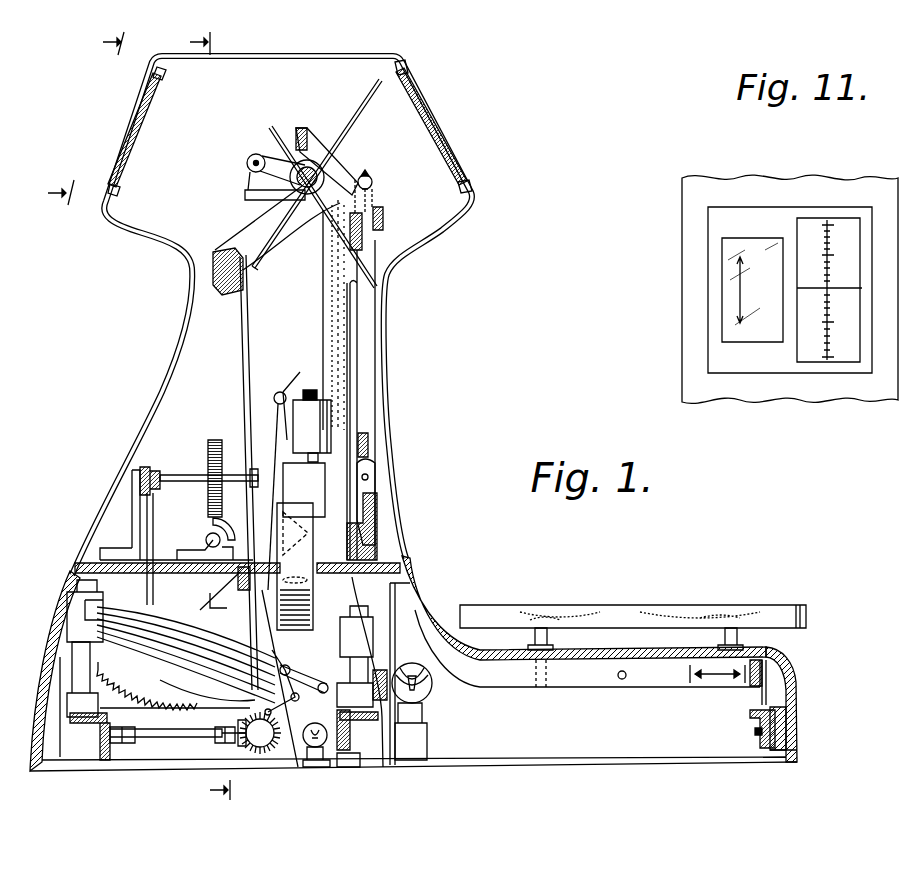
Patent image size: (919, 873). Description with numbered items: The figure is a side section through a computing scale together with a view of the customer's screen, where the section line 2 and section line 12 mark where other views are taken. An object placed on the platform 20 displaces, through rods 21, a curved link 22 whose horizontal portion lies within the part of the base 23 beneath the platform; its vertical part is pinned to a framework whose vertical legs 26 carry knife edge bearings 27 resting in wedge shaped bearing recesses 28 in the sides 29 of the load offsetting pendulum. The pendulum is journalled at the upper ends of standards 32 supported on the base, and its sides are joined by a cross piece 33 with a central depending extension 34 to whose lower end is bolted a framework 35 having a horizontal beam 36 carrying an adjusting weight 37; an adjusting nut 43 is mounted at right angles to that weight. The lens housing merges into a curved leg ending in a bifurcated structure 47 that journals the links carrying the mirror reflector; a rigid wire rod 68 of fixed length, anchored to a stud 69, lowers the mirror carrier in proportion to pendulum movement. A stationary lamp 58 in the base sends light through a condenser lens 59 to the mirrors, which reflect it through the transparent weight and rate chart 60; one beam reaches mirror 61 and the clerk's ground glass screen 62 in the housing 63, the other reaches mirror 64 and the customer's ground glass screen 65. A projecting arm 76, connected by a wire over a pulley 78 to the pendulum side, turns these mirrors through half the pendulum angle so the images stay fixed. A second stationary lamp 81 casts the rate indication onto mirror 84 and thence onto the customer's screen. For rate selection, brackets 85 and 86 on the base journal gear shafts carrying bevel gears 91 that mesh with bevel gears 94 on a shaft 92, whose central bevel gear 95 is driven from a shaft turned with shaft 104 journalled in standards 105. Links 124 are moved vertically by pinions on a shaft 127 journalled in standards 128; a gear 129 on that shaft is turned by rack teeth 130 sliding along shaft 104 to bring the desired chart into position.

In FIG. 1, the section line 2- 2 is at (217, 418).
In FIG. 1, the section line 12- 12 is at (98, 119).
In FIG. 1, the platform 20 is at (733, 612).
In FIG. 1, the rods 21 is at (733, 638).
In FIG. 1, the curved link 22 is at (605, 678).
In FIG. 1, the base 23 is at (50, 635).
In FIG. 1, the vertical legs 26 is at (372, 391).
In FIG. 1, the knife edge bearings 27 is at (370, 178).
In FIG. 1, the wedge shaped bearing recesses 28 is at (372, 192).
In FIG. 1, the sides 29 is at (338, 168).
In FIG. 1, the standards 32 is at (337, 278).
In FIG. 1, the cross piece 33 is at (233, 288).
In FIG. 1, the central depending extension 34 is at (250, 333).
In FIG. 1, the framework 35 is at (295, 597).
In FIG. 1, the horizontal beam 36 is at (315, 483).
In FIG. 1, the adjusting weight 37 is at (306, 427).
In FIG. 1, the adjusting nut 43 is at (240, 572).
In FIG. 1, the bifurcated structure 47 is at (270, 693).
In FIG. 1, the stationary lamp 58 is at (431, 697).
In FIG. 1, the condenser lens 59 is at (373, 686).
In FIG. 1, the weight and rate chart 60 is at (233, 651).
In FIG. 1, the mirror 61 is at (365, 103).
In FIG. 1, the ground glass screen 62 is at (431, 127).
In FIG. 1, the housing 63 is at (445, 217).
In FIG. 1, the mirror 64 is at (278, 124).
In FIG. 1, the ground glass screen 65 is at (133, 125).
In FIG. 11, the ground glass screen 65 is at (790, 224).
In FIG. 1, the rigid wire rod 68 is at (294, 380).
In FIG. 1, the stud 69 is at (280, 392).
In FIG. 1, the projecting arm 76 is at (256, 196).
In FIG. 1, the pulley 78 is at (258, 157).
In FIG. 1, the stationary lamp 81 is at (327, 740).
In FIG. 1, the mirror 84 is at (384, 280).
In FIG. 1, the bracket 85 is at (77, 603).
In FIG. 1, the bracket 86 is at (360, 627).
In FIG. 1, the bevel gears 91 is at (103, 720).
In FIG. 1, the shaft 92 is at (187, 737).
In FIG. 1, the bevel gears 94 is at (100, 750).
In FIG. 1, the bevel gear 95 is at (240, 720).
In FIG. 1, the shaft 104 is at (210, 537).
In FIG. 1, the standards 105 is at (207, 557).
In FIG. 1, the links 124 is at (151, 515).
In FIG. 1, the shaft 127 is at (185, 475).
In FIG. 1, the standards 128 is at (138, 504).
In FIG. 1, the gear 129 is at (217, 440).
In FIG. 1, the rack teeth 130 is at (230, 530).